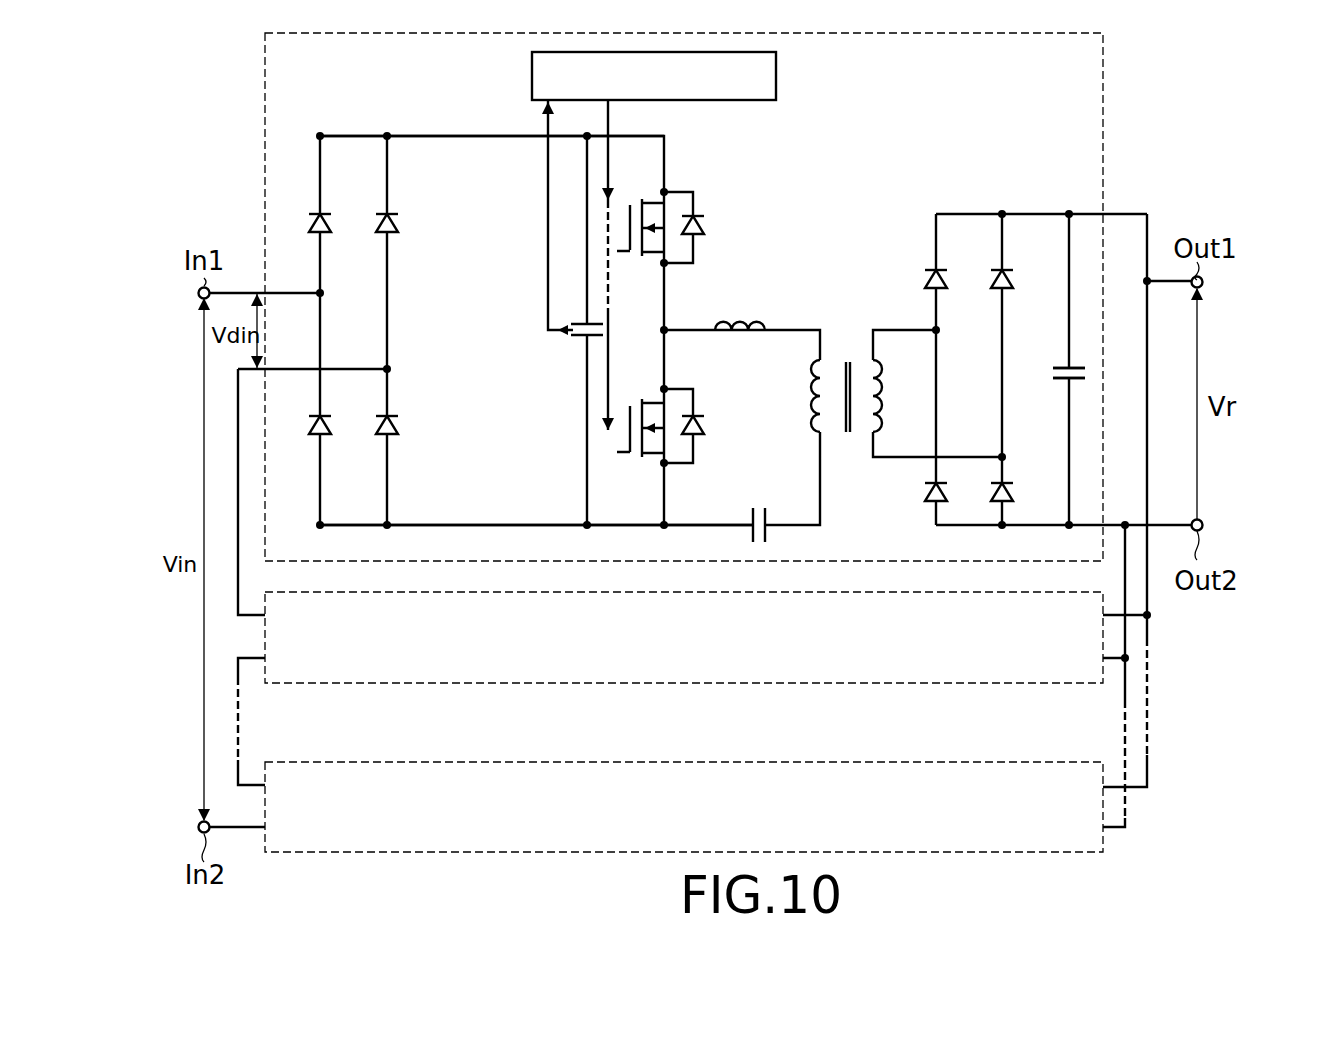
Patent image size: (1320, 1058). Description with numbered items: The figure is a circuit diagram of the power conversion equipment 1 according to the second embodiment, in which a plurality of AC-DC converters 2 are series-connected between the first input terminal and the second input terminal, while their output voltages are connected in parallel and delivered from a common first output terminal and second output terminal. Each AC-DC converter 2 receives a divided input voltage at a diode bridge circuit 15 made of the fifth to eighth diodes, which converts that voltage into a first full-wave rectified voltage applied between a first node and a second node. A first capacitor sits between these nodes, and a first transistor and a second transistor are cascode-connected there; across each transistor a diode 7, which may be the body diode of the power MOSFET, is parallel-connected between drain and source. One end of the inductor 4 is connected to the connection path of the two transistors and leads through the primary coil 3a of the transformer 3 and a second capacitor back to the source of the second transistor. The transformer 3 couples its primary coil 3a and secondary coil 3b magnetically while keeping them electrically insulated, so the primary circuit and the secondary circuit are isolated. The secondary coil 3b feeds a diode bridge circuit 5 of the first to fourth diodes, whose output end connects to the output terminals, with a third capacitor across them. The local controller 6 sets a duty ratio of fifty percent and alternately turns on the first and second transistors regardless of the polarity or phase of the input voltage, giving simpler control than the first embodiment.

The power conversion equipment 1 is at (1195, 851).
The AC-DC converter 2 is at (1103, 78).
The transformer 3 is at (848, 339).
The primary coil 3a is at (827, 352).
The secondary coil 3b is at (868, 361).
The inductor 4 is at (738, 322).
The diode bridge circuit 5 is at (975, 367).
The local controller 6 is at (776, 76).
The diode 7 is at (724, 426).
The diode bridge circuit 15 is at (360, 305).